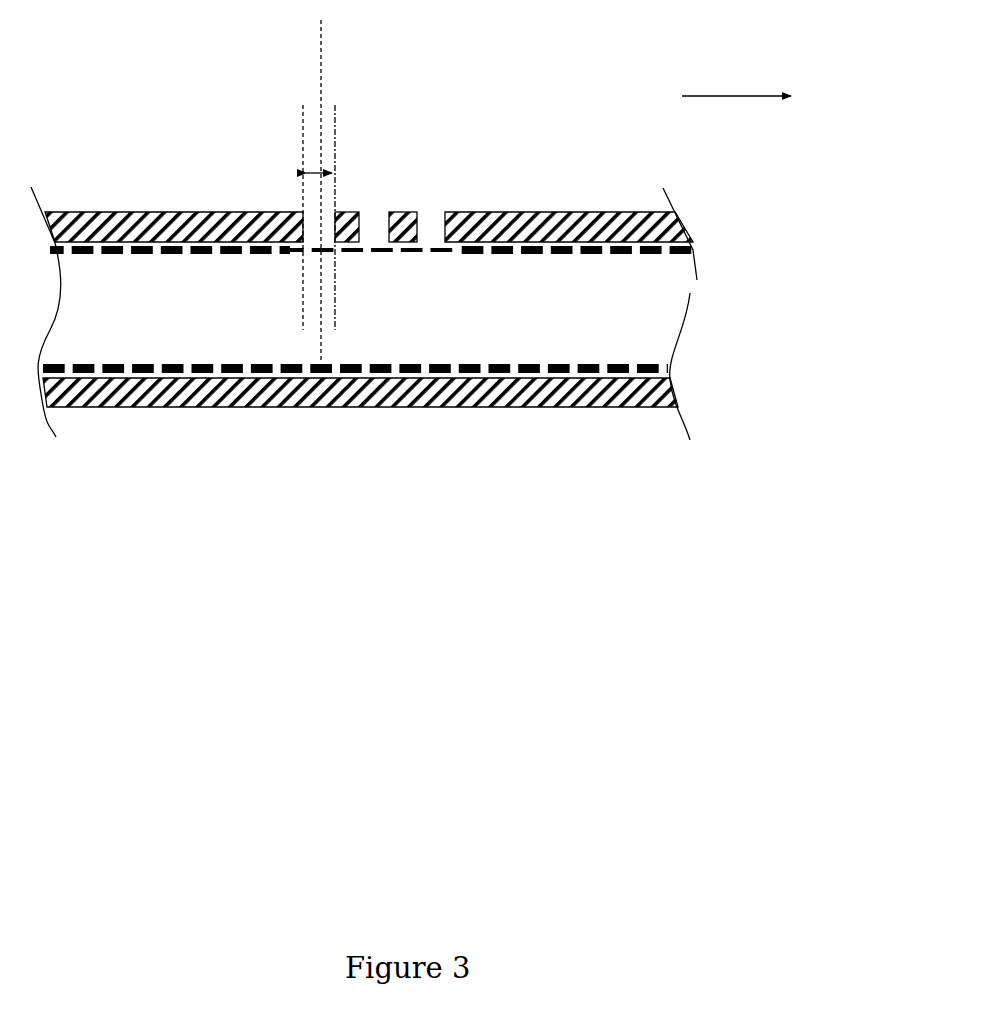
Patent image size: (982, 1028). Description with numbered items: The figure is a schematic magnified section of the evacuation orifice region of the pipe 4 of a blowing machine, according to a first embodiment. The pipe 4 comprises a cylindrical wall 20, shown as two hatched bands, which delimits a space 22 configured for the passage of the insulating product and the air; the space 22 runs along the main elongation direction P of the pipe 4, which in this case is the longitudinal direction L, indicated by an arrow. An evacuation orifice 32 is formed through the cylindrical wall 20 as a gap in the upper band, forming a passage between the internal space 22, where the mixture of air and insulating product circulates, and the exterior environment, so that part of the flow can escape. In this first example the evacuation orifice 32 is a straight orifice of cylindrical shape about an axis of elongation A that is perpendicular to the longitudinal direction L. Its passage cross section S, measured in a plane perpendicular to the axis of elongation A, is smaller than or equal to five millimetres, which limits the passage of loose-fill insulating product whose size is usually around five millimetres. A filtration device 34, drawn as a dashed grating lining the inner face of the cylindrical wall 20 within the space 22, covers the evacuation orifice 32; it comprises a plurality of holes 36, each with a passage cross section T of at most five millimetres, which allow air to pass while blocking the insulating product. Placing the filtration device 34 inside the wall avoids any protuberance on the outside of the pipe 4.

The pipe 4 is at (116, 104).
The cylindrical wall 20 is at (152, 218).
The space 22 is at (190, 355).
The evacuation orifice 32 is at (444, 212).
The filtration device 34 is at (443, 254).
The holes 36 is at (340, 254).
The axis of elongation A is at (321, 76).
The passage cross section S is at (322, 165).
The passage cross section T is at (397, 254).
The main elongation direction P is at (760, 97).
The longitudinal direction L is at (760, 97).